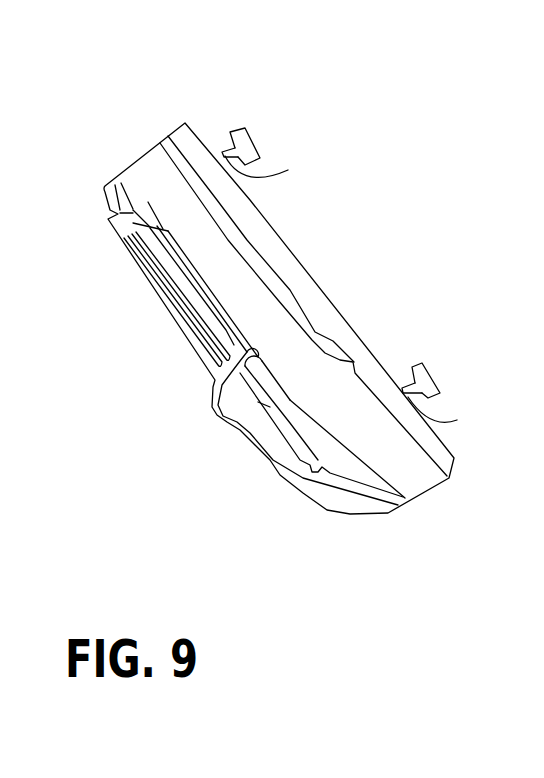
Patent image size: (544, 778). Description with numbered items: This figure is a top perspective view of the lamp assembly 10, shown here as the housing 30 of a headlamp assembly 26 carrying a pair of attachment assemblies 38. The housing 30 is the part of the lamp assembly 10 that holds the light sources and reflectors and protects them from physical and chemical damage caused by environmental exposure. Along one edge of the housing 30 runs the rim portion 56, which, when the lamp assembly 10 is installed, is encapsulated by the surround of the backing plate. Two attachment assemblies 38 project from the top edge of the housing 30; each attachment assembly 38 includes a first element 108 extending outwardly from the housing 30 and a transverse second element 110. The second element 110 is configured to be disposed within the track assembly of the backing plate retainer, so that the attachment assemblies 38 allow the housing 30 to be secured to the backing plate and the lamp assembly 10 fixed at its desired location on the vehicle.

The lamp assembly 10 is at (311, 299).
The headlamp assembly 26 is at (148, 142).
The housing 30 is at (313, 310).
The attachment assembly 38 is at (370, 227).
The rim portion 56 is at (338, 428).
The first element 108 is at (236, 165).
The second element 110 is at (250, 150).